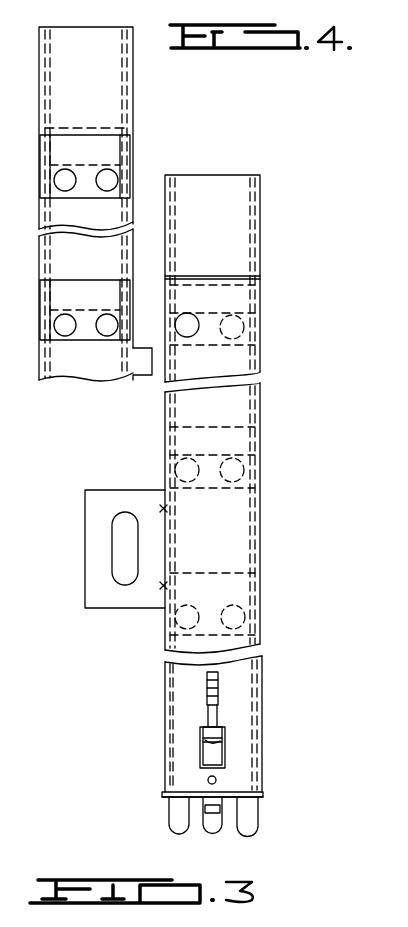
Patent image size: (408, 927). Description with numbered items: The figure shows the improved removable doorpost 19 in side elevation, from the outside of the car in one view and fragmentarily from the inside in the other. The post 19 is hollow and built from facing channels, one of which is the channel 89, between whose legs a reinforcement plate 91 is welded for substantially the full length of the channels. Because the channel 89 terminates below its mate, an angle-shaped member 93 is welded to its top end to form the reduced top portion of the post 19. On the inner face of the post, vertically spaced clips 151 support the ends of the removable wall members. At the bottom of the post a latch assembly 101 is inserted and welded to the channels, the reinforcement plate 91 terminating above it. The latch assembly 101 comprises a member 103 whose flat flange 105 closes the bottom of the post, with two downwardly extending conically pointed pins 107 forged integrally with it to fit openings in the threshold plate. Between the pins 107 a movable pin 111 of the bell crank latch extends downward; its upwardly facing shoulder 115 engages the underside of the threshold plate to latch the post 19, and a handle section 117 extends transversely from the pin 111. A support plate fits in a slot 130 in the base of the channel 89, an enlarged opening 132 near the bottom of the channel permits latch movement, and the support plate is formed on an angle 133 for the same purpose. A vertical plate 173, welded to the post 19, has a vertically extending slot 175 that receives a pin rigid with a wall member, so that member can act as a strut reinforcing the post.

In FIG. 3, the post 19 is at (262, 403).
In FIG. 3, the angle-shaped member 93 is at (245, 236).
In FIG. 3, the channel 89 is at (253, 650).
In FIG. 3, the reinforcement plate 91 is at (256, 712).
In FIG. 4, the clips 151 is at (83, 198).
In FIG. 3, the clips 151 is at (222, 576).
In FIG. 3, the vertical plate 173 is at (101, 565).
In FIG. 3, the slot 175 is at (120, 555).
In FIG. 3, the slot 130 is at (208, 693).
In FIG. 3, the enlarged opening 132 is at (200, 727).
In FIG. 3, the angle 133 is at (213, 720).
In FIG. 3, the latch assembly 101 is at (208, 755).
In FIG. 3, the handle section 117 is at (217, 743).
In FIG. 3, the flange 105 is at (165, 793).
In FIG. 3, the member 103 is at (265, 793).
In FIG. 3, the conically pointed pins 107 is at (180, 808).
In FIG. 3, the movable pin 111 is at (203, 828).
In FIG. 3, the shoulder 115 is at (220, 827).